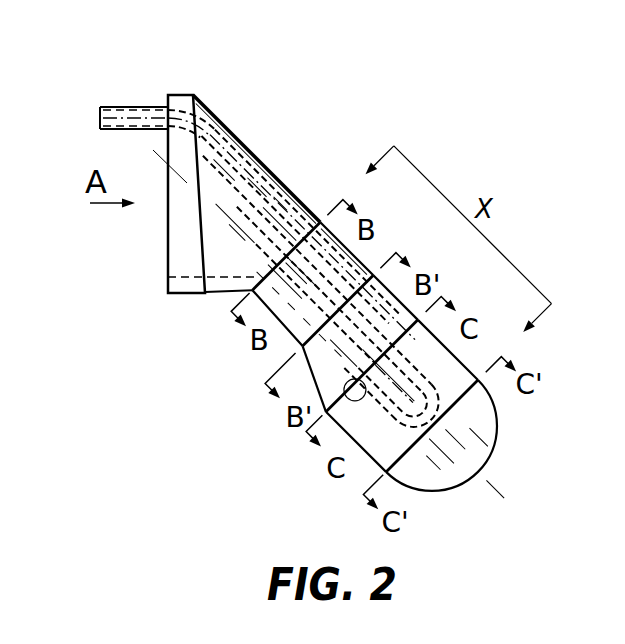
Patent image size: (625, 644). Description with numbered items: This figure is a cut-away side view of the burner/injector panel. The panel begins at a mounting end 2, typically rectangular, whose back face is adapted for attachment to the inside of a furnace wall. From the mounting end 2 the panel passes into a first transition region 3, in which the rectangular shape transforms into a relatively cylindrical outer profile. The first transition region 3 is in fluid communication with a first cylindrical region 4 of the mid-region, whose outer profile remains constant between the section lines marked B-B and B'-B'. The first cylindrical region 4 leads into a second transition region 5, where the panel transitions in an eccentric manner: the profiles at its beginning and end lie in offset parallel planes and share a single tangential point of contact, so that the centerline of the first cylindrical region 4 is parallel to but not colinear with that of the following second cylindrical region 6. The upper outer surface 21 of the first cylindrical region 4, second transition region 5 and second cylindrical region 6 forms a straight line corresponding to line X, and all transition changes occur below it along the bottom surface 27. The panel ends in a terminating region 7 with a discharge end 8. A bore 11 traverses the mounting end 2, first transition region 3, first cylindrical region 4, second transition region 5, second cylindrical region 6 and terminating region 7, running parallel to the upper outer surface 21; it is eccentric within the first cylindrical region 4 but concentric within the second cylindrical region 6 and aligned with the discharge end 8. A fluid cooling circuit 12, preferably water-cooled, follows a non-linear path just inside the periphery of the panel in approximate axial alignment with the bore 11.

The mounting end 2 is at (181, 93).
The first transition region 3 is at (253, 156).
The first cylindrical region 4 is at (371, 268).
The second transition region 5 is at (418, 313).
The second cylindrical region 6 is at (463, 358).
The terminating region 7 is at (498, 430).
The discharge end 8 is at (487, 462).
The bore 11 is at (223, 248).
The fluid cooling circuit 12 is at (215, 137).
The upper outer surface 21 is at (367, 263).
The bottom surface 27 is at (290, 341).